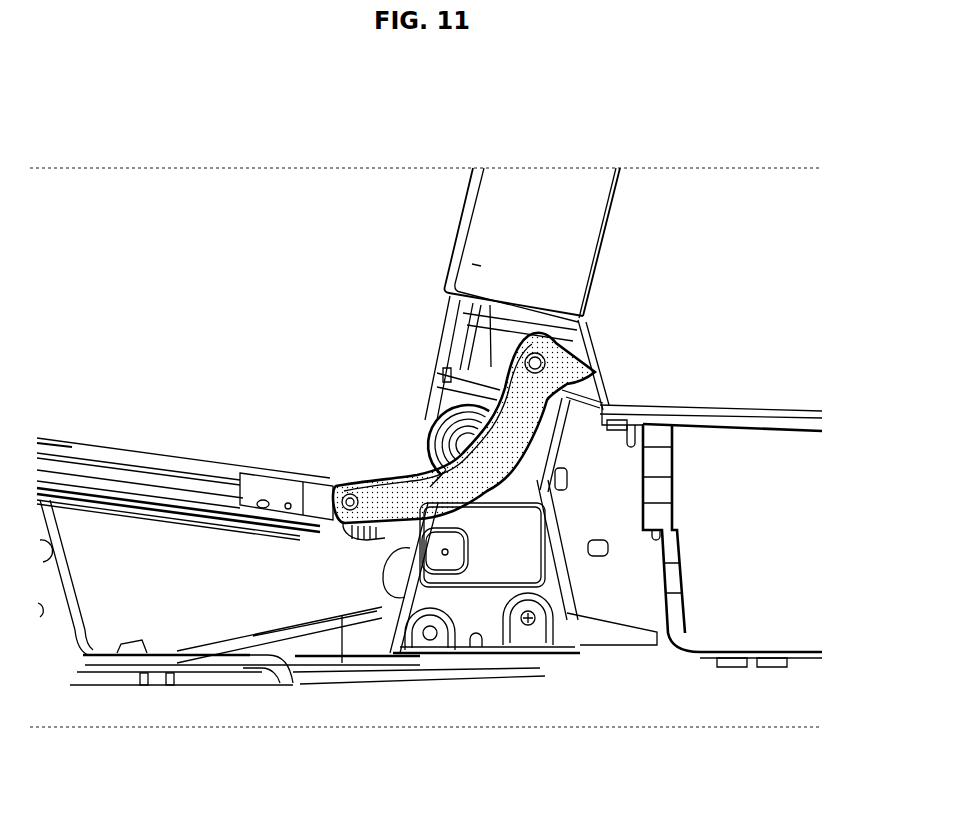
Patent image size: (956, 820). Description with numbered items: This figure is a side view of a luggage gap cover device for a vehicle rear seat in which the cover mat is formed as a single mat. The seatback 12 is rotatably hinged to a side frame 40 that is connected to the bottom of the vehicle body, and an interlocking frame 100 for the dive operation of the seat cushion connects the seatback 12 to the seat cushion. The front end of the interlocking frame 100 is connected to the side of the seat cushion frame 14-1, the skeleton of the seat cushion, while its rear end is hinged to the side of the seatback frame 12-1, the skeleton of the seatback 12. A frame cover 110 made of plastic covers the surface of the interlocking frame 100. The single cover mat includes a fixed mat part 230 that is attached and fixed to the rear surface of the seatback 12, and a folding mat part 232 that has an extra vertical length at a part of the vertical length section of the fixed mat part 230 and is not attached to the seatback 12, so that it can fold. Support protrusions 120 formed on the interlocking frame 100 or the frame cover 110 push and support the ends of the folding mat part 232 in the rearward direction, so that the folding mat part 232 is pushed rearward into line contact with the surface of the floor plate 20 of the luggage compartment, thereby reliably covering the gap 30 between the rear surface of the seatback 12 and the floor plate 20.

The seatback 12 is at (580, 190).
The seatback frame 12-1 is at (488, 355).
The seat cushion frame 14-1 is at (158, 477).
The floor plate 20 is at (722, 403).
The gap 30 is at (596, 413).
The side frame 40 is at (490, 570).
The interlocking frame 100 is at (390, 460).
The frame cover 110 is at (480, 402).
The support protrusion 120 is at (565, 313).
The fixed mat part 230 is at (607, 223).
The folding mat part 232 is at (594, 371).